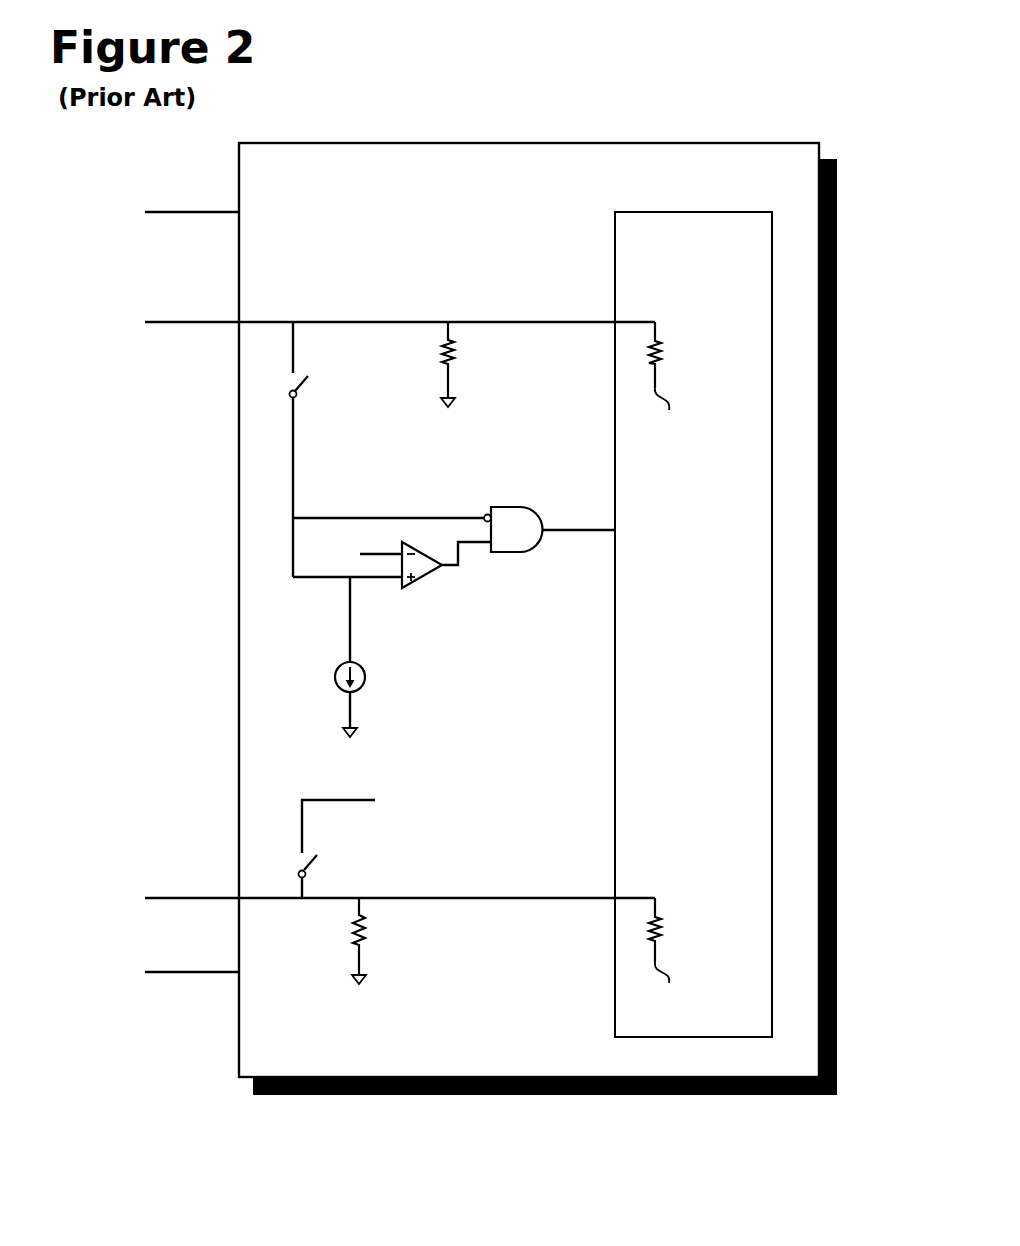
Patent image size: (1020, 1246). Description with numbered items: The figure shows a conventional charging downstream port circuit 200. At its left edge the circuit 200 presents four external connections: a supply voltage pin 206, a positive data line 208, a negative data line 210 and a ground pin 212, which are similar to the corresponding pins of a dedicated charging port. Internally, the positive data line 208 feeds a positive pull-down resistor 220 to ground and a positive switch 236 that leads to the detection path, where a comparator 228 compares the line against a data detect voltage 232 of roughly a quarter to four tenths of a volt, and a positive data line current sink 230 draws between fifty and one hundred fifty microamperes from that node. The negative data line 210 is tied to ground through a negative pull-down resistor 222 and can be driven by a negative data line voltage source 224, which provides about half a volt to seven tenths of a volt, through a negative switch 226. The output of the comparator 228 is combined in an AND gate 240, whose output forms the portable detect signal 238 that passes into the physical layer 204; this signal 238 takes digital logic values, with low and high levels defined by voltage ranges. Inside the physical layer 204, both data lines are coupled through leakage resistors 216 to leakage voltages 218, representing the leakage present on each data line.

The charging downstream port circuit 200 is at (757, 105).
The physical layer 204 is at (693, 624).
The supply voltage pin 206 is at (185, 212).
The positive data line 208 is at (167, 321).
The negative data line 210 is at (189, 898).
The ground pin 212 is at (202, 975).
The leakage resistors 216 is at (668, 352).
The leakage voltages 218 is at (661, 710).
The positive pull-down resistor 220 is at (457, 350).
The negative pull-down resistor 222 is at (373, 940).
The negative data line voltage source 224 is at (375, 800).
The negative switch 226 is at (313, 860).
The comparator 228 is at (433, 572).
The positive data line current sink 230 is at (368, 678).
The data detect voltage 232 is at (360, 553).
The positive switch 236 is at (299, 391).
The portable detect signal 238 is at (548, 533).
The AND gate 240 is at (517, 505).